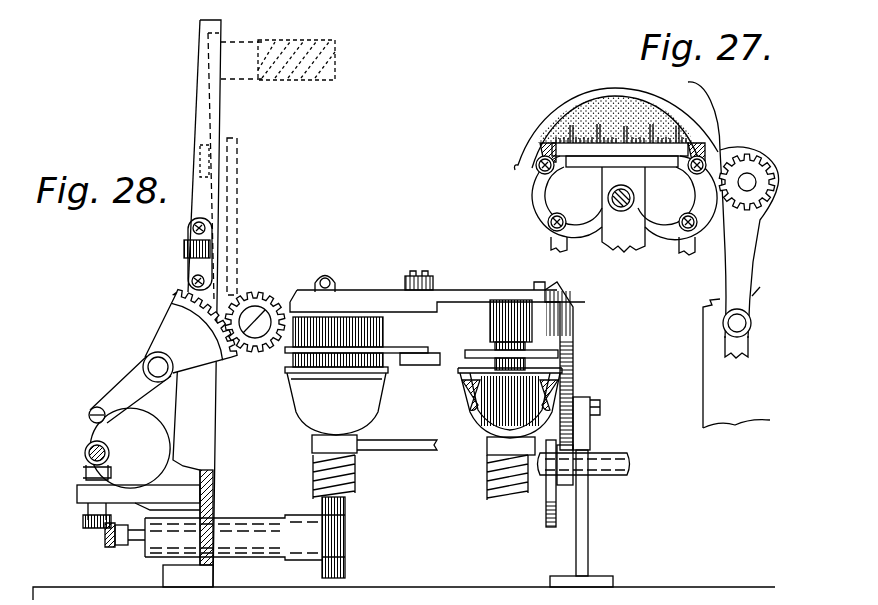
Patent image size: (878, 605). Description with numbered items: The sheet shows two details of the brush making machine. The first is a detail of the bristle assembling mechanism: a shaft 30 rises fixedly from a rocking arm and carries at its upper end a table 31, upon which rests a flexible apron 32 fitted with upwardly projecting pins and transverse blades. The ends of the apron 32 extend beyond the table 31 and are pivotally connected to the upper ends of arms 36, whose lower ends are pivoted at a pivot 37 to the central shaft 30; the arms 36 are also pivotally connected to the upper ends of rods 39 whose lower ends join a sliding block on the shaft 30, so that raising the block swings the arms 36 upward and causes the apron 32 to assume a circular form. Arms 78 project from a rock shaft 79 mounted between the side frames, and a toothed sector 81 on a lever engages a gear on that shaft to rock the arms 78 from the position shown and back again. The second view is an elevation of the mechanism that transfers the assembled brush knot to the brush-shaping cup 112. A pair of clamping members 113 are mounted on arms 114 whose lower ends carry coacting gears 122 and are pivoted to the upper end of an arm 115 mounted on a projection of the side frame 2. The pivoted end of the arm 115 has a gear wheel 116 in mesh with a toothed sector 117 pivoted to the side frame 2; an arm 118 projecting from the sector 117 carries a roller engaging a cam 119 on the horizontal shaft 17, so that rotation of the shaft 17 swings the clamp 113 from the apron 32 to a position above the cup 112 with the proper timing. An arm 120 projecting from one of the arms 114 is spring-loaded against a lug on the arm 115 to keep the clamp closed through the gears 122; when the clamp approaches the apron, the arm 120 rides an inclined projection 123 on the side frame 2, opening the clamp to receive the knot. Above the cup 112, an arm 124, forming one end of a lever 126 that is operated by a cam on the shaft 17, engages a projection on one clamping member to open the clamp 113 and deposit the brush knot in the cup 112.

In FIG. 28, the side frame 2 is at (200, 119).
In FIG. 28, the clamping members 113 is at (238, 40).
In FIG. 28, the arm 115 is at (238, 172).
In FIG. 28, the inclined projection 123 is at (185, 248).
In FIG. 28, the arms 114 is at (467, 297).
In FIG. 28, the arm 120 is at (350, 296).
In FIG. 28, the coacting gears 122 is at (436, 289).
In FIG. 28, the gear wheel 116 is at (258, 295).
In FIG. 28, the toothed sector 117 is at (172, 333).
In FIG. 28, the arm 118 is at (123, 387).
In FIG. 28, the cam 119 is at (62, 437).
In FIG. 28, the horizontal shaft 17 is at (112, 447).
In FIG. 28, the brush-shaping cup 112 is at (466, 412).
In FIG. 28, the arm 124 is at (573, 323).
In FIG. 28, the lever 126 is at (575, 433).
In FIG. 27, the arms 78 is at (589, 93).
In FIG. 27, the table 31 is at (582, 167).
In FIG. 27, the flexible apron 32 is at (690, 136).
In FIG. 27, the shaft 30 is at (626, 252).
In FIG. 27, the arms 36 is at (537, 196).
In FIG. 27, the pivot 37 is at (632, 193).
In FIG. 27, the rods 39 is at (561, 245).
In FIG. 27, the toothed sector 81 is at (748, 262).
In FIG. 27, the rock shaft 79 is at (752, 180).